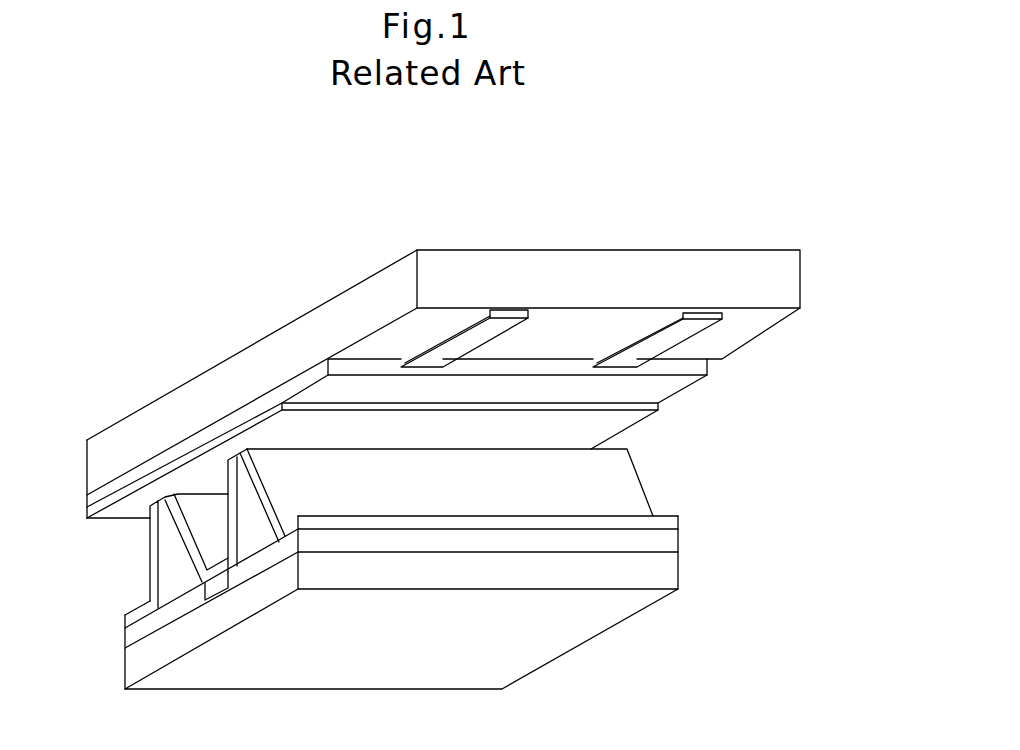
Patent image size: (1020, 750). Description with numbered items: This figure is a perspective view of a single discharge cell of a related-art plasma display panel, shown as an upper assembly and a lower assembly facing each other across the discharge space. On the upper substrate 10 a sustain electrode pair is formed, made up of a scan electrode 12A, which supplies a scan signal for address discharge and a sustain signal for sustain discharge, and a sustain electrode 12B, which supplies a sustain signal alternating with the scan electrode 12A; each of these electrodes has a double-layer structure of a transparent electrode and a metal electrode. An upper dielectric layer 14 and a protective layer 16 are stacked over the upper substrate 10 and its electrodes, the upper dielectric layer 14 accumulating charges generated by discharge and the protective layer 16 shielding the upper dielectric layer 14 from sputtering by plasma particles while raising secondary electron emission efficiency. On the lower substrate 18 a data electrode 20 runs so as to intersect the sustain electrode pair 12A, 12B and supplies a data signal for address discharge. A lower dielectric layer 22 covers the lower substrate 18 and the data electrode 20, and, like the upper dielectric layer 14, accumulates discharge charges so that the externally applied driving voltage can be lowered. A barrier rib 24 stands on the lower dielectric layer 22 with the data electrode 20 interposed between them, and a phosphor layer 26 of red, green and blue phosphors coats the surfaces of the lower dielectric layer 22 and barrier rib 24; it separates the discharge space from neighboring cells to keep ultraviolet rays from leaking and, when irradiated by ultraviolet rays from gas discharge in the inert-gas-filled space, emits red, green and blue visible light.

The upper substrate 10 is at (605, 250).
The scan electrode 12A is at (560, 308).
The sustain electrode 12B is at (640, 308).
The upper dielectric layer 14 is at (288, 386).
The protective layer 16 is at (216, 443).
The lower substrate 18 is at (124, 675).
The data electrode 20 is at (167, 622).
The lower dielectric layer 22 is at (663, 543).
The barrier rib 24 is at (163, 572).
The phosphor layer 26 is at (632, 490).